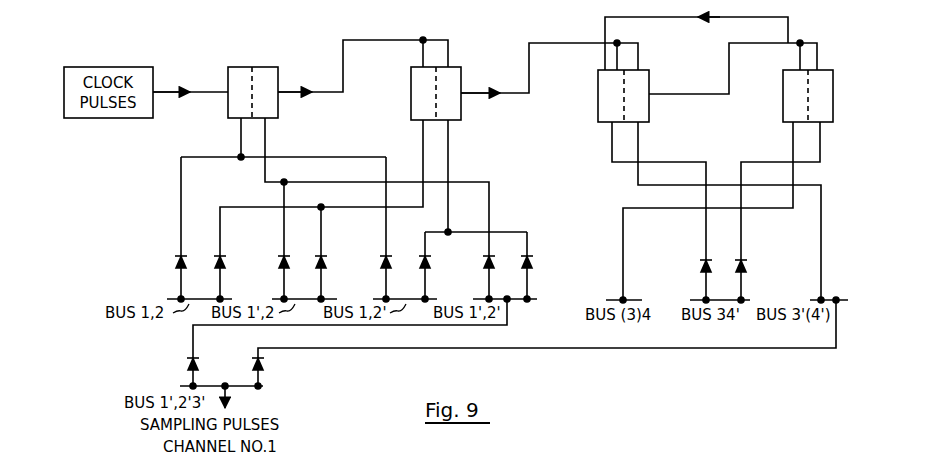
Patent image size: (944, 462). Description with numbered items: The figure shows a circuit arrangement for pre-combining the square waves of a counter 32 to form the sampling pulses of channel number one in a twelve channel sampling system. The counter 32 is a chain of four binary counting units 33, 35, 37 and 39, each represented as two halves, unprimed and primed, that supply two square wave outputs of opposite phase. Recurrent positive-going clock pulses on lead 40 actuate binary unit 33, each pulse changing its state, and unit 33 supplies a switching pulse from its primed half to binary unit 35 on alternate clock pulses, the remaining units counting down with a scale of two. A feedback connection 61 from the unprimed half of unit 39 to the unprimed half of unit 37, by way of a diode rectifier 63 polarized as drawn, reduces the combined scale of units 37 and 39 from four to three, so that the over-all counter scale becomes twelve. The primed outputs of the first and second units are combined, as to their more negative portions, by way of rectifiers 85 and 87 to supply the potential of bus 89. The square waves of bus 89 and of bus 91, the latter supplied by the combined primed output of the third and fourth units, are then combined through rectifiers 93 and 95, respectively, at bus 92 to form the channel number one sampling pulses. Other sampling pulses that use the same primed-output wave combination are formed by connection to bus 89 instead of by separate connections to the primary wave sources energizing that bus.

The counter 32 is at (448, 30).
The binary counting unit 33 is at (234, 67).
The binary counting unit 35 is at (460, 67).
The binary counting unit 37 is at (598, 114).
The binary counting unit 39 is at (828, 69).
The clock pulse lead 40 is at (222, 88).
The feedback connection 61 is at (818, 24).
The diode rectifier 63 is at (699, 3).
The rectifier 85 is at (482, 268).
The rectifier 87 is at (531, 263).
The bus 89 is at (537, 302).
The bus 91 is at (836, 298).
The bus 92 is at (262, 390).
The rectifier 93 is at (187, 363).
The rectifier 95 is at (261, 362).